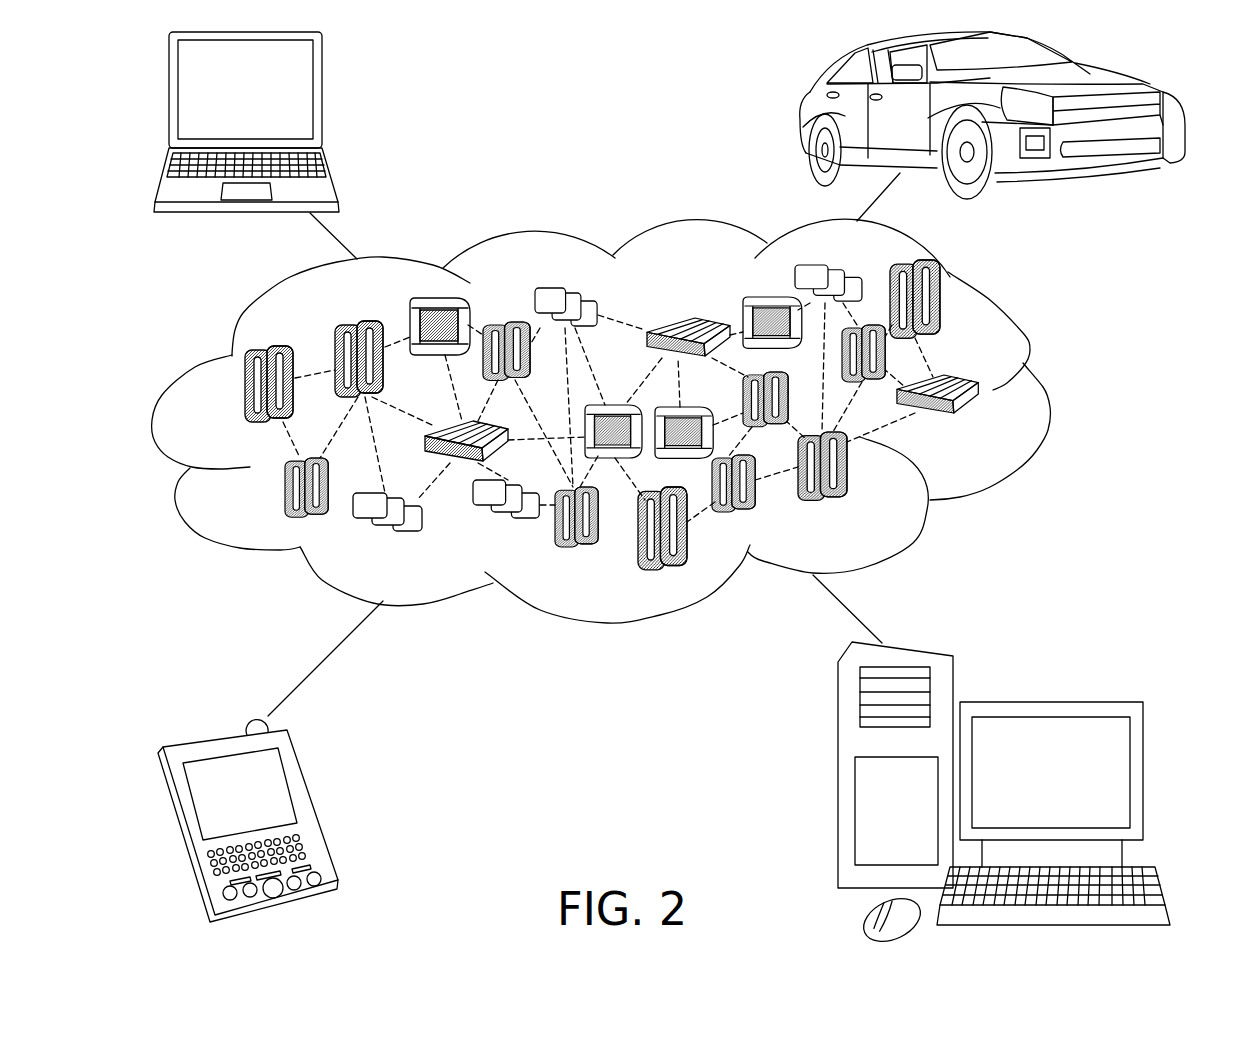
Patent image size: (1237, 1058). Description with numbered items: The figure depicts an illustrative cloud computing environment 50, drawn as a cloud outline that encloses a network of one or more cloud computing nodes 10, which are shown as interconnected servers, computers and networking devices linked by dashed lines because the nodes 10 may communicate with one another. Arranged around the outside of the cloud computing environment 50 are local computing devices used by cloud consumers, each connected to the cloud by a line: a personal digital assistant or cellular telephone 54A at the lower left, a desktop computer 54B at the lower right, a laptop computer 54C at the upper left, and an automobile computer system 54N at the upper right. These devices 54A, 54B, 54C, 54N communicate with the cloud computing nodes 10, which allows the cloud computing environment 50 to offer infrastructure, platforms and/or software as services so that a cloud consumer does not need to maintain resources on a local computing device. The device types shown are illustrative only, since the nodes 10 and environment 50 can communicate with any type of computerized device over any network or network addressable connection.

The cloud computing nodes 10 is at (980, 425).
The cloud computing environment 50 is at (1047, 392).
The personal digital assistant or cellular telephone 54A is at (312, 806).
The desktop computer 54B is at (1047, 700).
The laptop computer 54C is at (322, 100).
The automobile computer system 54N is at (806, 118).